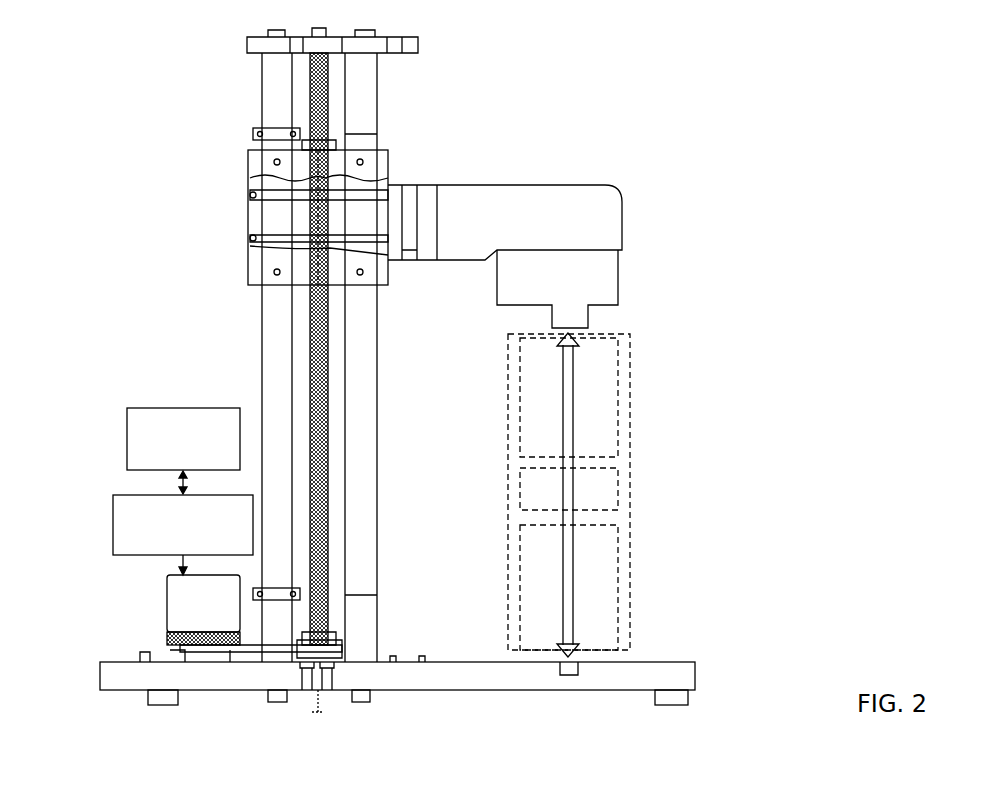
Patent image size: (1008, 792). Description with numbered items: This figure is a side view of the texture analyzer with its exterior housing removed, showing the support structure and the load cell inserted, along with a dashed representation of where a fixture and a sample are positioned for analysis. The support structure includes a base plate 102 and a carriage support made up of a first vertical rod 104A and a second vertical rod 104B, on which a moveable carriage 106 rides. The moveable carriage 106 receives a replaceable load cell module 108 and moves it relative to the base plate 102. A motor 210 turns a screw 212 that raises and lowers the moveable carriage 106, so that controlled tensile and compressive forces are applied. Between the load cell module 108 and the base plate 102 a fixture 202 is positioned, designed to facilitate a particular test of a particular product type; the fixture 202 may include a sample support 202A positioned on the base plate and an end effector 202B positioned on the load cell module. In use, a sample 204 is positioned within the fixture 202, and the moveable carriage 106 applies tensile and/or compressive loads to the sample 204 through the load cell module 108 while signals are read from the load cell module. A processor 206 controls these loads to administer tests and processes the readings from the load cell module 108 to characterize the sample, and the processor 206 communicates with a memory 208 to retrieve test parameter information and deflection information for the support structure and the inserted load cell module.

The base plate 102 is at (695, 664).
The first vertical rod 104A is at (260, 362).
The second vertical rod 104B is at (377, 372).
The moveable carriage 106 is at (609, 183).
The load cell module 108 is at (620, 276).
The fixture 202 is at (607, 494).
The sample support 202A is at (620, 582).
The end effector 202B is at (620, 407).
The sample 204 is at (620, 487).
The processor 206 is at (113, 528).
The memory 208 is at (127, 440).
The motor 210 is at (167, 605).
The screw 212 is at (330, 543).